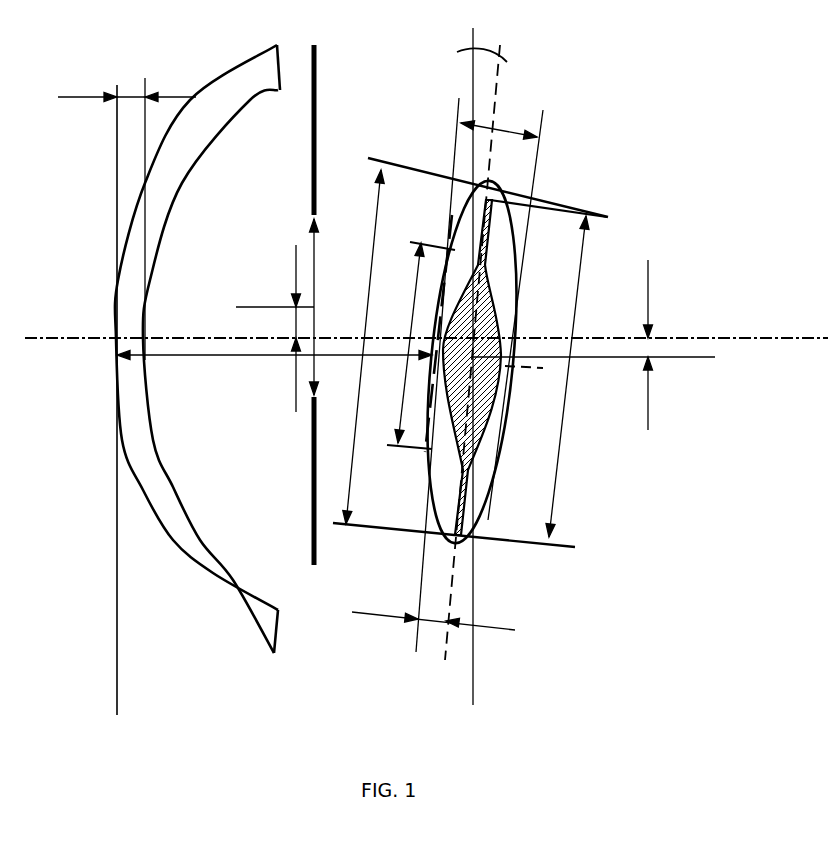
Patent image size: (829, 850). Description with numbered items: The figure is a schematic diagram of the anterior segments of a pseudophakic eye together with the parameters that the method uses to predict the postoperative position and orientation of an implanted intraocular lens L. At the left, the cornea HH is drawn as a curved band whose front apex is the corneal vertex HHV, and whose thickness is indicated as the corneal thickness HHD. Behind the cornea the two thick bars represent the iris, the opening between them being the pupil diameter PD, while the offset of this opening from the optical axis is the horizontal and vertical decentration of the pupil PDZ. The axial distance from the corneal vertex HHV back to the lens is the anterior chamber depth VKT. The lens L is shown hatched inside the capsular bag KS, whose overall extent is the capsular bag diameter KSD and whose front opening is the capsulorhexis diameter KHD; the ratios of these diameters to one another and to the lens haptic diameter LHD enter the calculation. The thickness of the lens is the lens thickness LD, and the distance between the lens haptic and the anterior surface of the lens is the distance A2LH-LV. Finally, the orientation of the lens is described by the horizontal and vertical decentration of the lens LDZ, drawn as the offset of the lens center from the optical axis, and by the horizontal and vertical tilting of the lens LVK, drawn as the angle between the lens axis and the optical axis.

The cornea HH is at (201, 583).
The corneal vertex HHV is at (113, 335).
The corneal thickness HHD is at (121, 85).
The pupil diameter PD is at (312, 259).
The horizontal and vertical decentration of the pupil PDZ is at (295, 326).
The anterior chamber depth VKT is at (274, 371).
The capsular bag diameter KSD is at (470, 352).
The capsulorhexis diameter KHD is at (421, 333).
The capsular bag KS is at (503, 191).
The lens L is at (483, 395).
The horizontal and vertical tilting of the lens LVK is at (488, 68).
The lens thickness LD is at (508, 121).
The lens haptic diameter LHD is at (548, 368).
The horizontal and vertical decentration of the lens LDZ is at (673, 344).
The distance between lens haptics and the anterior surface of the lens A2LH-LV is at (430, 631).